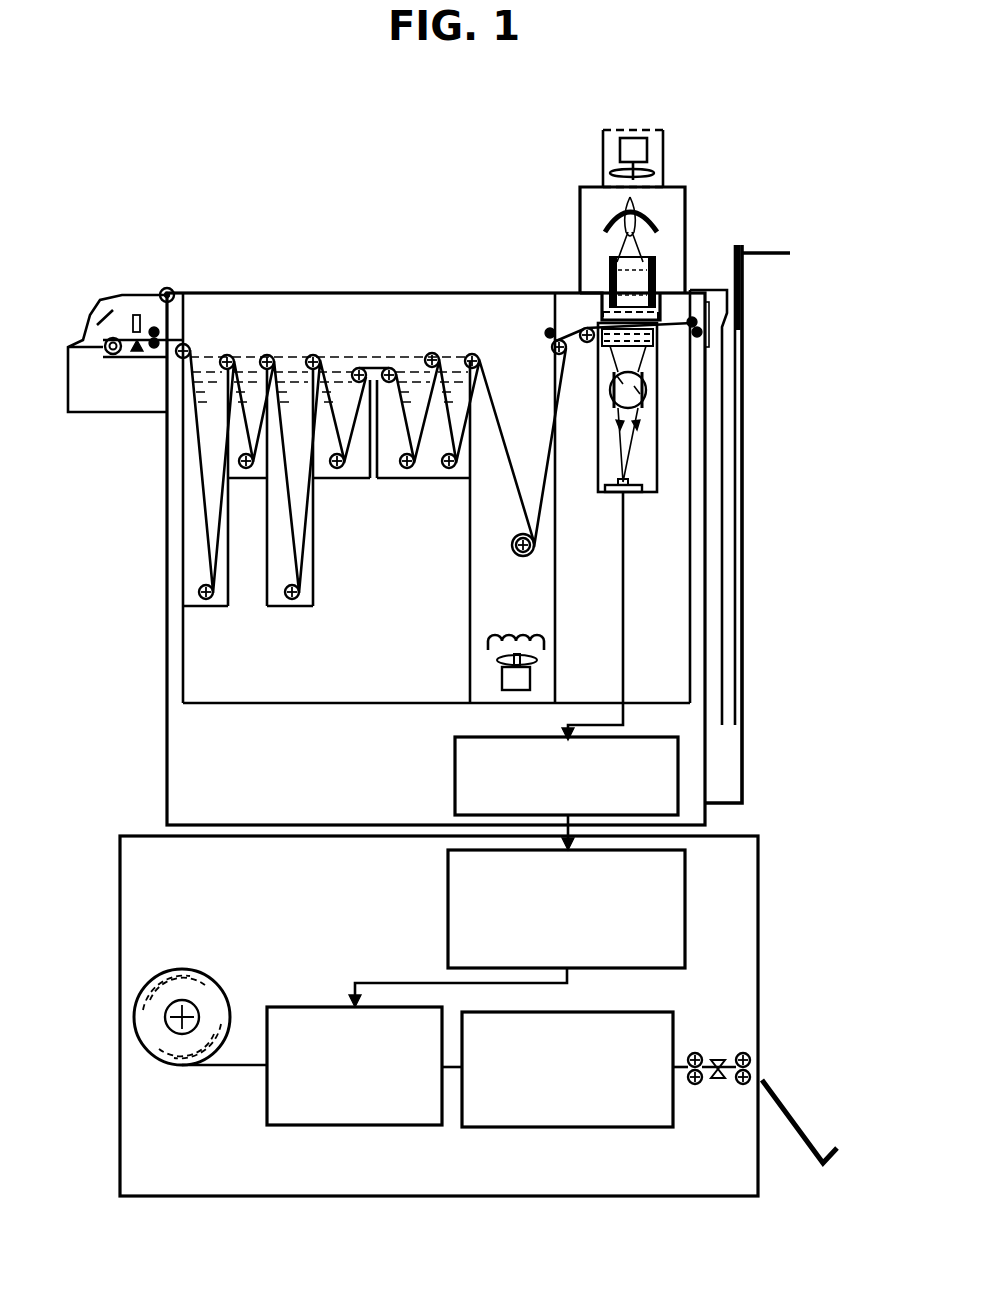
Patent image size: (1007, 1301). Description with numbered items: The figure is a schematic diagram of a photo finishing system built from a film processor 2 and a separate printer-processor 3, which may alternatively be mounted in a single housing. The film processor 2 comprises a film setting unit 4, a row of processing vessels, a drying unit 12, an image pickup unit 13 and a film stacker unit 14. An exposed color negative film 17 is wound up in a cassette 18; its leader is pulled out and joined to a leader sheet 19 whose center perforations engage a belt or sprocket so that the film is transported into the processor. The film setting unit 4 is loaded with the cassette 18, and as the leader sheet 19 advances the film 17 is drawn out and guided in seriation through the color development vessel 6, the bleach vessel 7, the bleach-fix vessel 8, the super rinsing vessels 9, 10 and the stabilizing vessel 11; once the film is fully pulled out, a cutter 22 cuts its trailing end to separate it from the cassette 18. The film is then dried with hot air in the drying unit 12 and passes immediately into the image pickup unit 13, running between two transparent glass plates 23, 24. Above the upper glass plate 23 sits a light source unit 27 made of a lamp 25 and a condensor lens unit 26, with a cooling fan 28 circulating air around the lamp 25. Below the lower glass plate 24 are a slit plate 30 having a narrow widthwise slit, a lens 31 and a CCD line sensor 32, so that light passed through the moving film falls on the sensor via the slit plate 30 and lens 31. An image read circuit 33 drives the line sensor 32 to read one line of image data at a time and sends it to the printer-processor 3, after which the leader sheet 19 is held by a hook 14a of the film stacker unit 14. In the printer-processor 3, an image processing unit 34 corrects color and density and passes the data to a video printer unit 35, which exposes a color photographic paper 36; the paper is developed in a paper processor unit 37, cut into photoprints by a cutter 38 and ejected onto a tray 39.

The film processor 2 is at (444, 453).
The printer-processor 3 is at (116, 907).
The film setting unit 4 is at (130, 302).
The color development vessel 6 is at (185, 530).
The bleach vessel 7 is at (243, 472).
The bleach-fix vessel 8 is at (275, 600).
The super rinsing vessel 9 is at (350, 472).
The super rinsing vessel 10 is at (393, 472).
The stabilizing vessel 11 is at (446, 472).
The drying unit 12 is at (488, 558).
The image pickup unit 13 is at (638, 326).
The film stacker unit 14 is at (750, 284).
The hook 14a is at (760, 257).
The color negative film 17 is at (145, 327).
The cassette 18 is at (108, 340).
The leader sheet 19 is at (745, 250).
The cutter 22 is at (137, 358).
The transparent glass plate 23 is at (600, 320).
The transparent glass plate 24 is at (623, 447).
The lamp 25 is at (605, 218).
The condensor lens unit 26 is at (607, 273).
The light source unit 27 is at (638, 245).
The cooling fan 28 is at (652, 175).
The slit plate 30 is at (605, 348).
The lens 31 is at (612, 398).
The CCD line sensor 32 is at (617, 500).
The image read circuit 33 is at (453, 772).
The image processing unit 34 is at (447, 911).
The video printer unit 35 is at (358, 1125).
The color photographic paper 36 is at (236, 1065).
The paper processor unit 37 is at (570, 1127).
The cutter 38 is at (719, 1085).
The tray 39 is at (795, 1118).